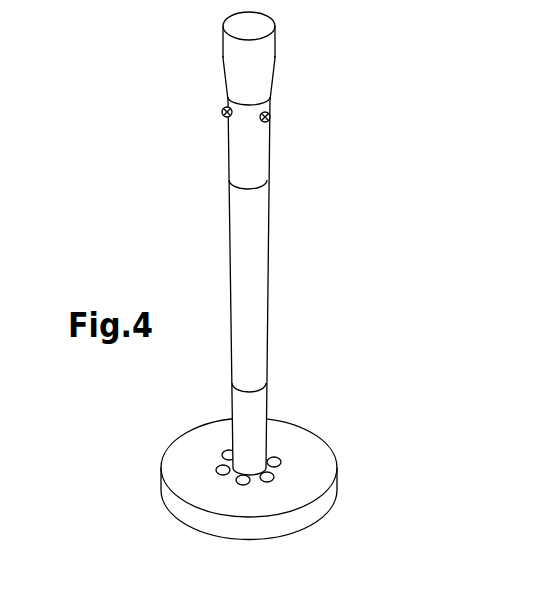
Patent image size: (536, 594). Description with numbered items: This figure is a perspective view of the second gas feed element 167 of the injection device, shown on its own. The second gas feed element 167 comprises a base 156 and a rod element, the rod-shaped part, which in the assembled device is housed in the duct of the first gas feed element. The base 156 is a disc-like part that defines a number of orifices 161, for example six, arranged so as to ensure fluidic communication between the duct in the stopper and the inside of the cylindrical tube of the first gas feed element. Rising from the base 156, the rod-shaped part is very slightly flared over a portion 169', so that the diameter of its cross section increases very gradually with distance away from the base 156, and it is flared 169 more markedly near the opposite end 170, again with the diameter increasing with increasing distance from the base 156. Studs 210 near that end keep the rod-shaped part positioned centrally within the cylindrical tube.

The base 156 is at (334, 498).
The orifices 161 is at (275, 453).
The second gas feed element 167 is at (318, 220).
The flared portion 169 is at (294, 123).
The slightly flared rod portion 169' is at (296, 296).
The opposite end 170 is at (263, 25).
The studs 210 is at (222, 108).